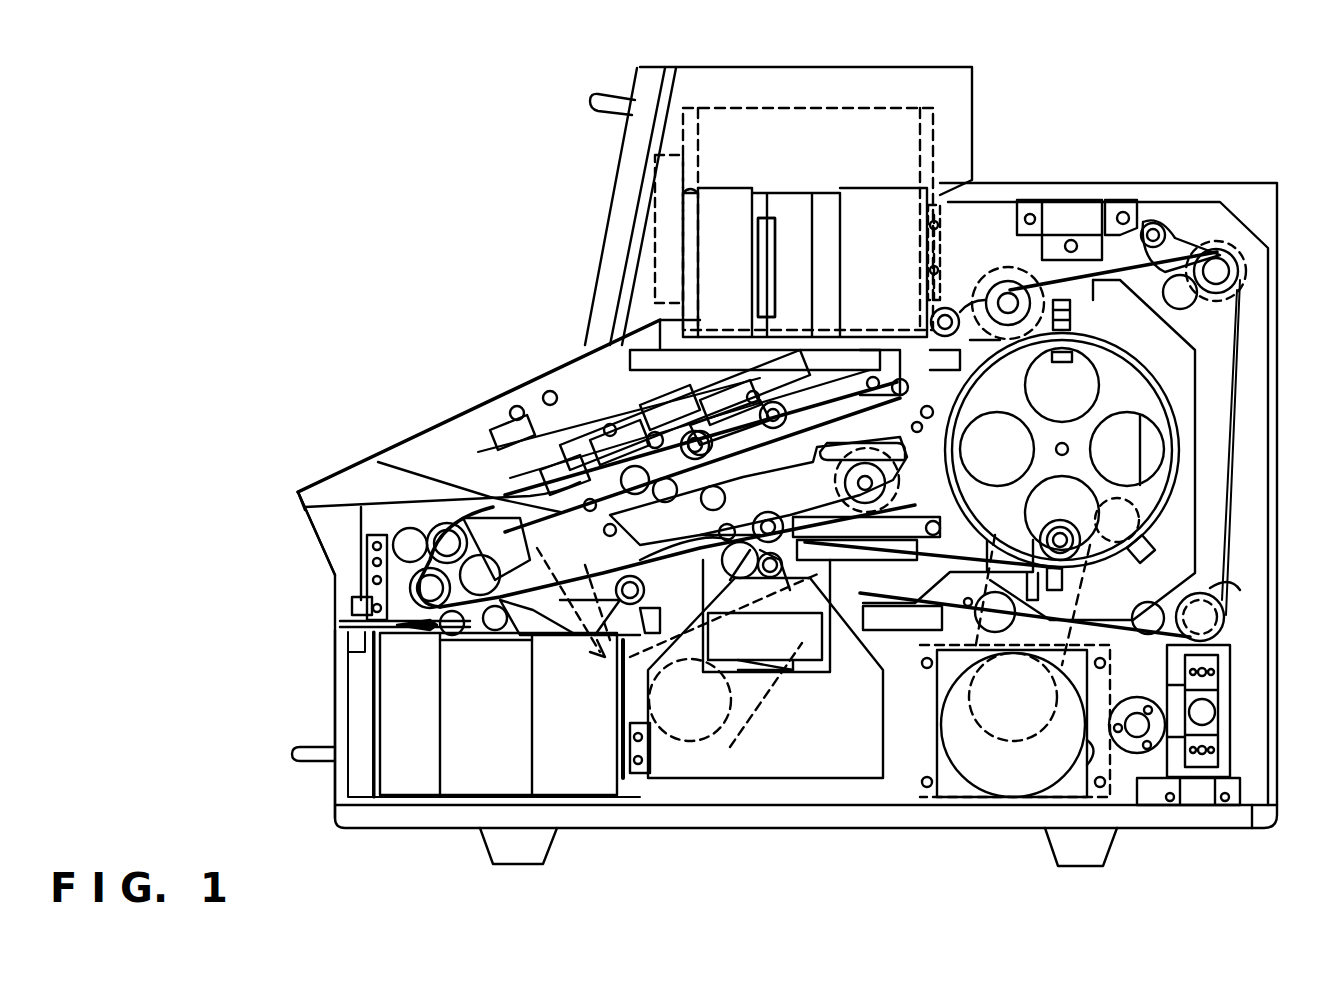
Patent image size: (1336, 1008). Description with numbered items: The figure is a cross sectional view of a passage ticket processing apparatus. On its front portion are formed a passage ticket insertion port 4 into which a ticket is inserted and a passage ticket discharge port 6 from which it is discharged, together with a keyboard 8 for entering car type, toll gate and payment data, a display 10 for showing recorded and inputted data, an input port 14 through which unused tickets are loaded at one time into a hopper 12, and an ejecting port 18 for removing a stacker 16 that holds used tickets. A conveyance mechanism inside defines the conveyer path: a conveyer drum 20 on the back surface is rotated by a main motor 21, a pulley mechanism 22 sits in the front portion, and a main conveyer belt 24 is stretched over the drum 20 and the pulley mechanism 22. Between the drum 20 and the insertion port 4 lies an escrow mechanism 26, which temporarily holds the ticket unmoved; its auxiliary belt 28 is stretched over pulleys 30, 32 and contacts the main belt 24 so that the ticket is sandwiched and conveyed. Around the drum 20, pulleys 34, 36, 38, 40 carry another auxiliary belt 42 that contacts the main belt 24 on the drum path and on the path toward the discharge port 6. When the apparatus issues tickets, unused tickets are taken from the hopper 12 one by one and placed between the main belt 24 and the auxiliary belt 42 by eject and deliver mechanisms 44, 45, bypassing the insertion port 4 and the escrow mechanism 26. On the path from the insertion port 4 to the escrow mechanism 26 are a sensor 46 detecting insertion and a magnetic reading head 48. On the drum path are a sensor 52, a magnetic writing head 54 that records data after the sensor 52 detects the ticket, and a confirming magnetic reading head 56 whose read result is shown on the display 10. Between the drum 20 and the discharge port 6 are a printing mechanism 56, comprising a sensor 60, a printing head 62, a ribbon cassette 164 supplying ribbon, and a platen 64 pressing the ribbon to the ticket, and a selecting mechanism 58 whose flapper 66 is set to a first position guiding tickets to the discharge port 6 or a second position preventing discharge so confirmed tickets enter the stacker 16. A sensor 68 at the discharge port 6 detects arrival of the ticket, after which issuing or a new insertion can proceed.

The passage ticket insertion port 4 is at (358, 493).
The passage ticket discharge port 6 is at (336, 628).
The keyboard 8 is at (482, 362).
The display 10 is at (612, 235).
The hopper 12 is at (822, 122).
The input port 14 is at (673, 177).
The stacker 16 is at (462, 785).
The ejecting port 18 is at (322, 697).
The conveyer drum 20 is at (1117, 368).
The main motor 21 is at (1000, 745).
The pulley mechanism 22 is at (367, 560).
The main conveyer belt 24 is at (612, 572).
The escrow mechanism 26 is at (782, 345).
The auxiliary belt 28 is at (572, 445).
The pulley 30 is at (510, 478).
The pulley 32 is at (853, 365).
The pulley 34 is at (1222, 300).
The pulley 36 is at (1235, 622).
The pulley 38 is at (838, 620).
The pulley 40 is at (1003, 280).
The auxiliary belt 42 is at (1265, 420).
The eject mechanism 44 is at (952, 290).
The deliver mechanism 45 is at (716, 318).
The sensor 46 is at (485, 478).
The magnetic reading head 48 is at (547, 417).
The sensor 52 is at (1075, 312).
The magnetic writing head 54 is at (1147, 548).
The printing mechanism 56 is at (1070, 582).
The selecting mechanism 58 is at (498, 648).
The sensor 60 is at (766, 616).
The printing head 62 is at (797, 650).
The platen 64 is at (718, 538).
The flapper 66 is at (588, 650).
The sensor 68 is at (350, 608).
The ribbon cassette 164 is at (845, 768).